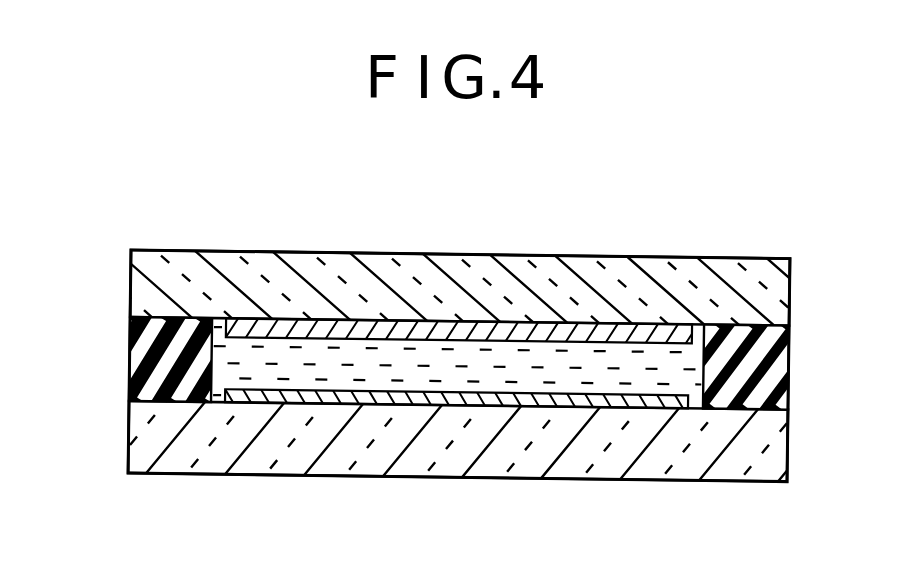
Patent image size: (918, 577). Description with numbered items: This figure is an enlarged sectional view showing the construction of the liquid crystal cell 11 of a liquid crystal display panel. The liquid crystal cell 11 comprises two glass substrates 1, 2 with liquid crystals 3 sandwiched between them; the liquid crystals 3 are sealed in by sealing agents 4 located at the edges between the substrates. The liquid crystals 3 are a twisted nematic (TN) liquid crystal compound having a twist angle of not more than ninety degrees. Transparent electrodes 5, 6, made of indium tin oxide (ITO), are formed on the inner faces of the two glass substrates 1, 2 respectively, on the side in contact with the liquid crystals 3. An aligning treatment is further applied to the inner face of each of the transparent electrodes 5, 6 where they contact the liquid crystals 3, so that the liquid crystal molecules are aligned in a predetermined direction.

The glass substrate 1 is at (131, 258).
The glass substrate 2 is at (148, 457).
The liquid crystals 3 is at (434, 362).
The sealing agents 4 is at (131, 347).
The transparent electrode 5 is at (278, 316).
The transparent electrode 6 is at (268, 404).
The liquid crystal cell 11 is at (807, 259).